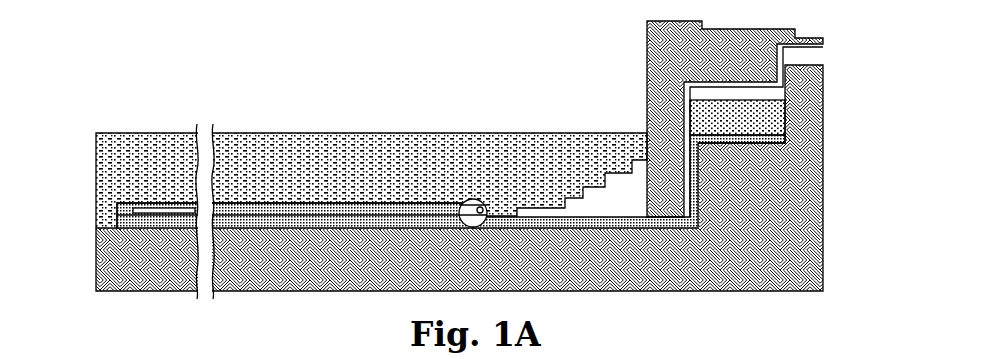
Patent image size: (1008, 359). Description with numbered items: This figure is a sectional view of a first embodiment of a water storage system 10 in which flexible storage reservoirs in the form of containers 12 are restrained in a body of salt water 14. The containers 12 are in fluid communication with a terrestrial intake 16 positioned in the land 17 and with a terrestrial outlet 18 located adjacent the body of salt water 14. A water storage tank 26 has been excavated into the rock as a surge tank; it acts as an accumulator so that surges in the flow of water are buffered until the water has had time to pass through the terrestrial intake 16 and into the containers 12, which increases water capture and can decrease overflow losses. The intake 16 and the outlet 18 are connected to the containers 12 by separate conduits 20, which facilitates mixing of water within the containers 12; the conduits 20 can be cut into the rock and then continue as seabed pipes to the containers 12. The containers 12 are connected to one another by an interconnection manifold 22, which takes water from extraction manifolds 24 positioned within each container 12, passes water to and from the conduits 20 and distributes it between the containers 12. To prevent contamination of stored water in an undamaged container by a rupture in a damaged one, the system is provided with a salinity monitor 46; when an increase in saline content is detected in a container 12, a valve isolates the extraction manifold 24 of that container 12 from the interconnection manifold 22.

The water storage system 10 is at (317, 86).
The container 12 is at (260, 222).
The body of salt water 14 is at (380, 177).
The terrestrial intake 16 is at (698, 175).
The land 17 is at (760, 228).
The terrestrial outlet 18 is at (686, 106).
The conduit 20 is at (590, 222).
The interconnection manifold 22 is at (485, 205).
The extraction manifold 24 is at (328, 218).
The water storage tank 26 is at (780, 115).
The salinity monitor 46 is at (125, 215).